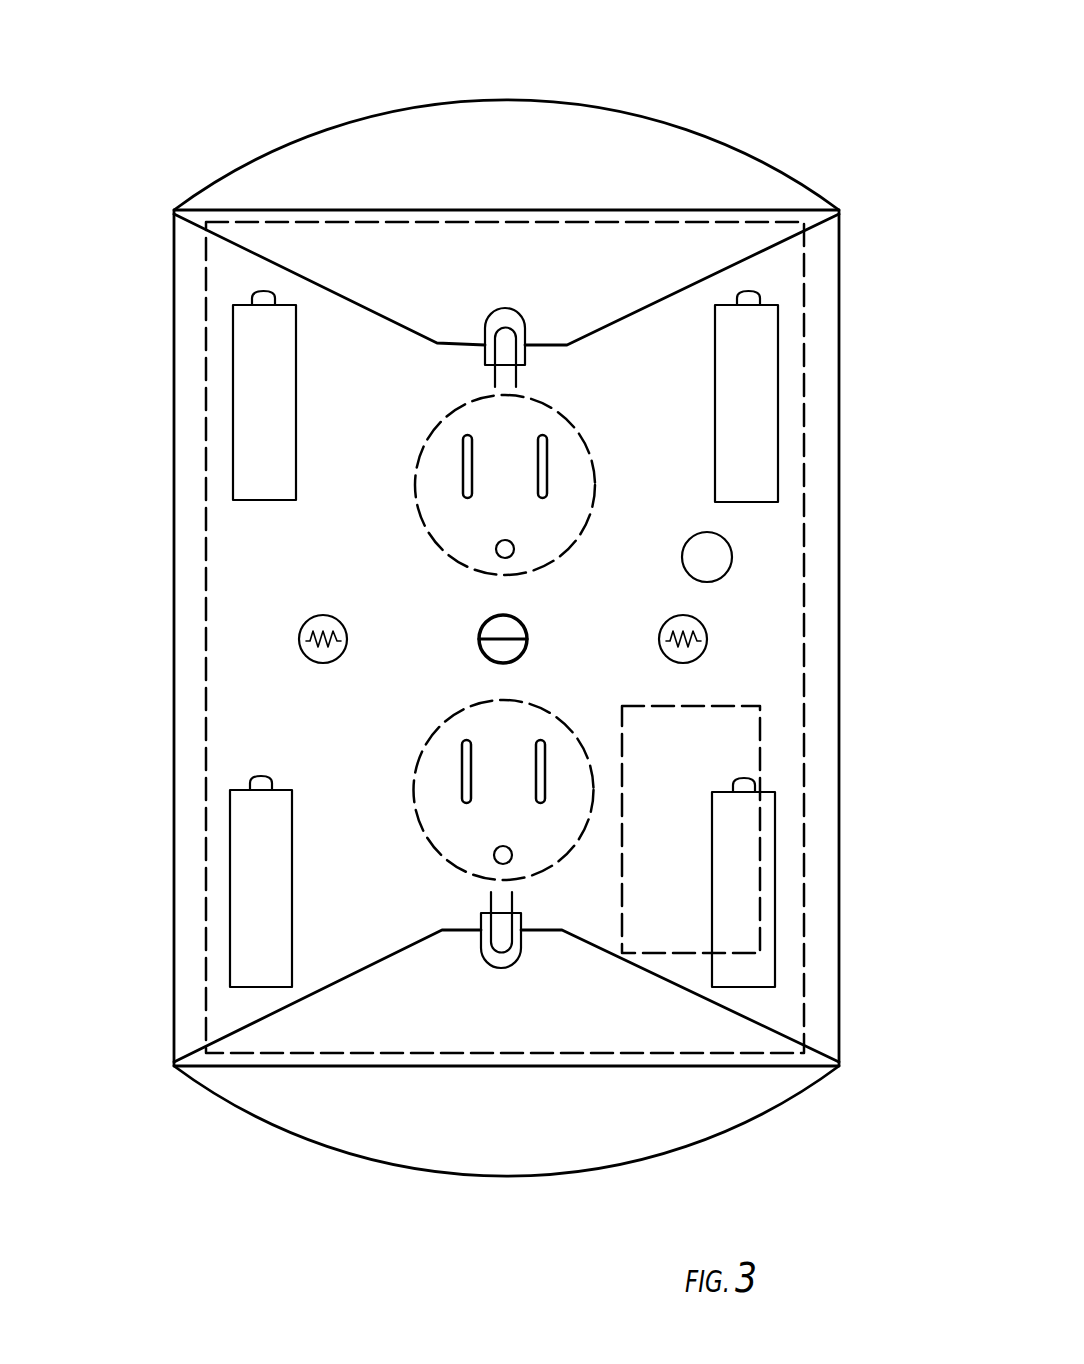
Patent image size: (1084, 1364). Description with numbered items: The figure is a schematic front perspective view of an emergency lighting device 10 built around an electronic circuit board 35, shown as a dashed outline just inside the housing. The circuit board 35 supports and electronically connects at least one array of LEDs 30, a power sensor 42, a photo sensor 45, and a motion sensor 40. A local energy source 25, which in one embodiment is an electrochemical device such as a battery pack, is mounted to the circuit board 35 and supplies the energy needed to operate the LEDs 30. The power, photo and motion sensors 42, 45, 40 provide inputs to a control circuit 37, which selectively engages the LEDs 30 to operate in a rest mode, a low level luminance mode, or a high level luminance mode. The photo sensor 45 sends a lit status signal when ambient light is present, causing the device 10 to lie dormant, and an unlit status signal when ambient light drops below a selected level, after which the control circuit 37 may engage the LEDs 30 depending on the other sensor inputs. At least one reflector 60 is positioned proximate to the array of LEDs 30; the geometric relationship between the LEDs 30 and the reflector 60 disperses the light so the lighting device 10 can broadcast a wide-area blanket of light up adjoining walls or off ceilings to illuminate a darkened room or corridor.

The lighting device 10 is at (637, 100).
The local energy source 25 is at (297, 347).
The array of LEDs 30 is at (472, 358).
The electronic circuit board 35 is at (203, 978).
The control circuit 37 is at (690, 962).
The motion sensor 40 is at (299, 645).
The power sensor 42 is at (733, 540).
The photo sensor 45 is at (708, 647).
The reflector 60 is at (500, 1232).